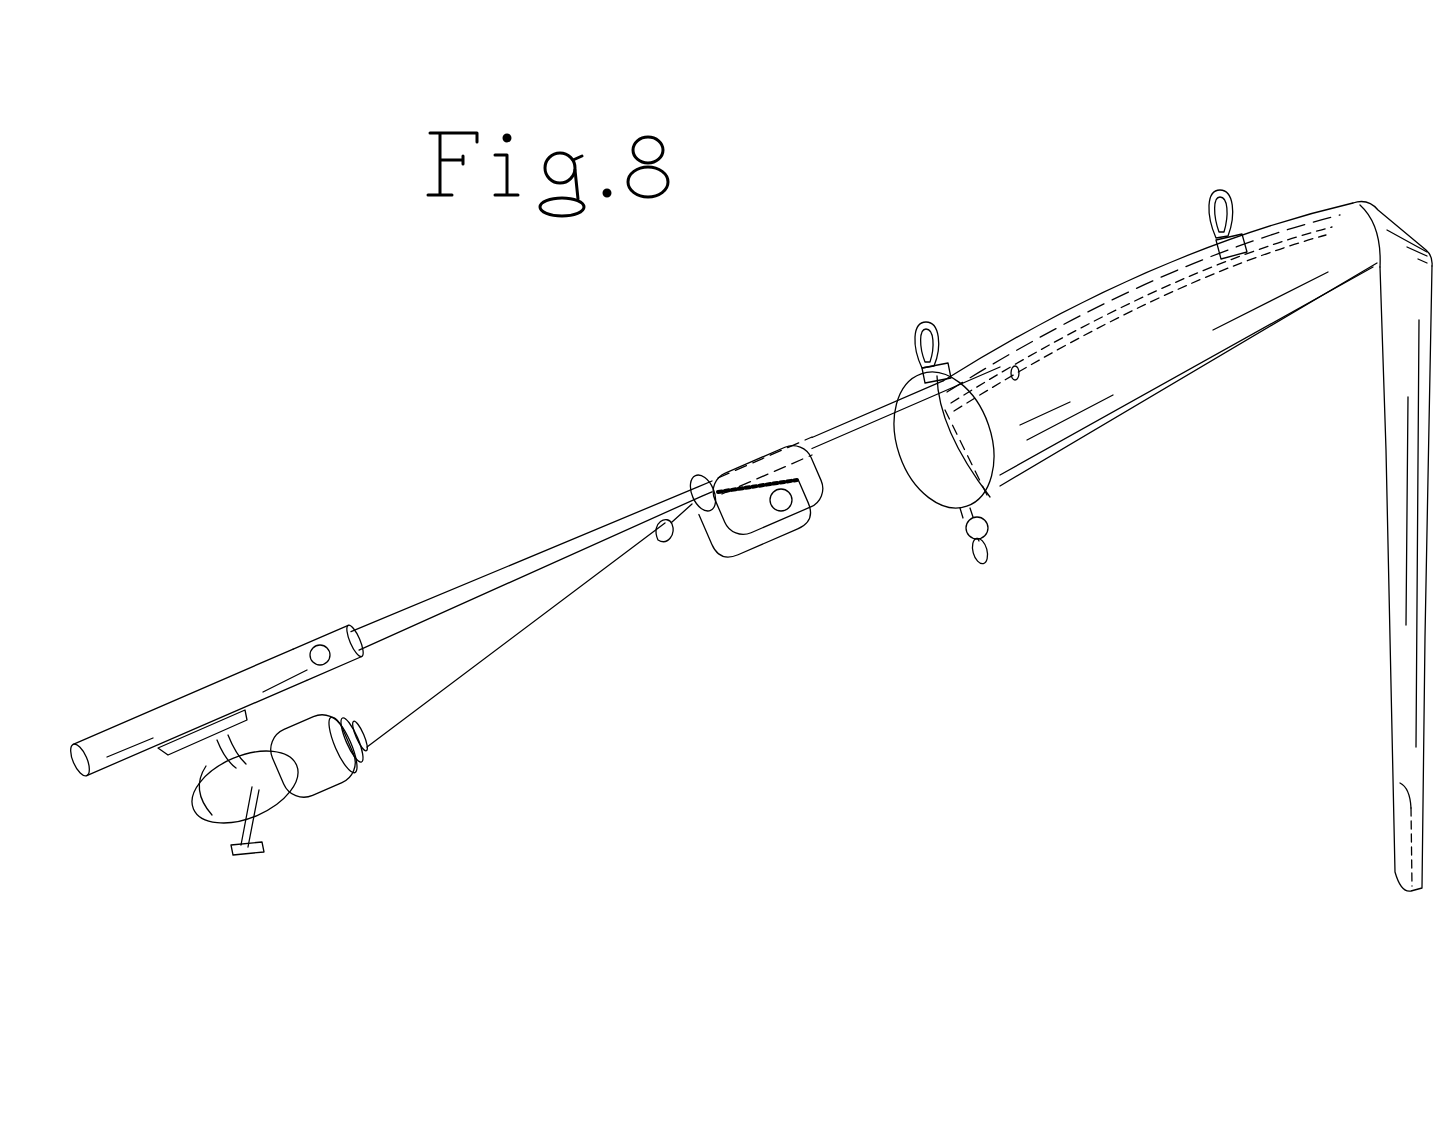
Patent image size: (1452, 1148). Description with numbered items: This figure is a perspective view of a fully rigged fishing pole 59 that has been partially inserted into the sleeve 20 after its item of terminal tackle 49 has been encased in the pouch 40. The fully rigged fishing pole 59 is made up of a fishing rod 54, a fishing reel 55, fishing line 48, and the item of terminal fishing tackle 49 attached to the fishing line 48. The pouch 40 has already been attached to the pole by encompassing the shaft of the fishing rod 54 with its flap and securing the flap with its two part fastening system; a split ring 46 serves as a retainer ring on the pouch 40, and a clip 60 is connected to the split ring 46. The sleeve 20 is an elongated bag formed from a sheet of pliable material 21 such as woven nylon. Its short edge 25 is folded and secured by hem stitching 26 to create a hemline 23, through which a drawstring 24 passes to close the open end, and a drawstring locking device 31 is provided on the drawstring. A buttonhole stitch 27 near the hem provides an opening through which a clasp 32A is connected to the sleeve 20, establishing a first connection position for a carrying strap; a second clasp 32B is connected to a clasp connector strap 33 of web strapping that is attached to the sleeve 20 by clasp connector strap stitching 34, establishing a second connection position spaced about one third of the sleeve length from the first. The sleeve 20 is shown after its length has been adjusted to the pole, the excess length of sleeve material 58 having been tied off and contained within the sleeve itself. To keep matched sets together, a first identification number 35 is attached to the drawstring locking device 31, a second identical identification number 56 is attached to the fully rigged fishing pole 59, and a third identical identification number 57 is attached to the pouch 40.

The sleeve 20 is at (1078, 240).
The pliable material 21 is at (1395, 362).
The hemline 23 is at (953, 513).
The drawstring 24 is at (978, 563).
The edge 25 is at (970, 472).
The hem stitching 26 is at (950, 455).
The buttonhole stitch 27 is at (952, 352).
The drawstring locking device 31 is at (987, 549).
The clasp 32A is at (915, 338).
The second clasp 32B is at (1213, 195).
The clasp connector strap 33 is at (1238, 235).
The clasp connector strap stitching 34 is at (1257, 237).
The identification number 35 is at (988, 527).
The pouch 40 is at (735, 385).
The split ring 46 is at (698, 476).
The fishing line 48 is at (487, 660).
The item of terminal fishing tackle 49 is at (775, 485).
The fishing rod 54 is at (254, 670).
The fishing reel 55 is at (267, 793).
The identification number 56 is at (312, 645).
The identification number 57 is at (790, 511).
The excess length of sleeve material 58 is at (1404, 830).
The fully rigged fishing pole 59 is at (562, 545).
The clip 60 is at (672, 548).